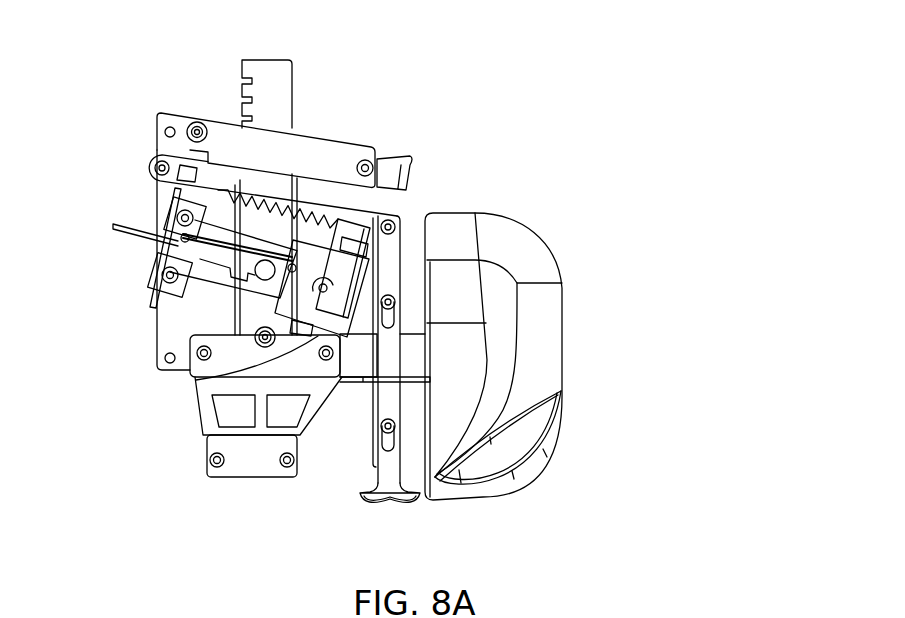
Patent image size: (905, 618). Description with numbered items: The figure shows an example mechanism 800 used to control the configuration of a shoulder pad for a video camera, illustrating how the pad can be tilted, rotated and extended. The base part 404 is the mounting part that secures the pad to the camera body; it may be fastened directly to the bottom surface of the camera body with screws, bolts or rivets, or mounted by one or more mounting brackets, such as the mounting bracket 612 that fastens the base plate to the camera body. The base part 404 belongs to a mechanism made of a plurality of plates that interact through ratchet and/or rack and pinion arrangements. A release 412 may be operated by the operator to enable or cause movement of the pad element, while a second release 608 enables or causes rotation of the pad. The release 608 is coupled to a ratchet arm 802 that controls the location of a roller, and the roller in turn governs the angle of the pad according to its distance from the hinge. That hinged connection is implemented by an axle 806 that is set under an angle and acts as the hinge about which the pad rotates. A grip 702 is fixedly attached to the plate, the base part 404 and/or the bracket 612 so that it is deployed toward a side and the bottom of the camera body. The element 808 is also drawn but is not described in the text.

The mechanism 800 is at (122, 76).
The base part 404 is at (266, 70).
The release 412 is at (410, 162).
The ratchet arm 802 is at (398, 216).
The axle 806 is at (149, 298).
The bracket plate 808 is at (210, 380).
The mounting bracket 612 is at (254, 458).
The release 608 is at (362, 500).
The grip 702 is at (531, 460).